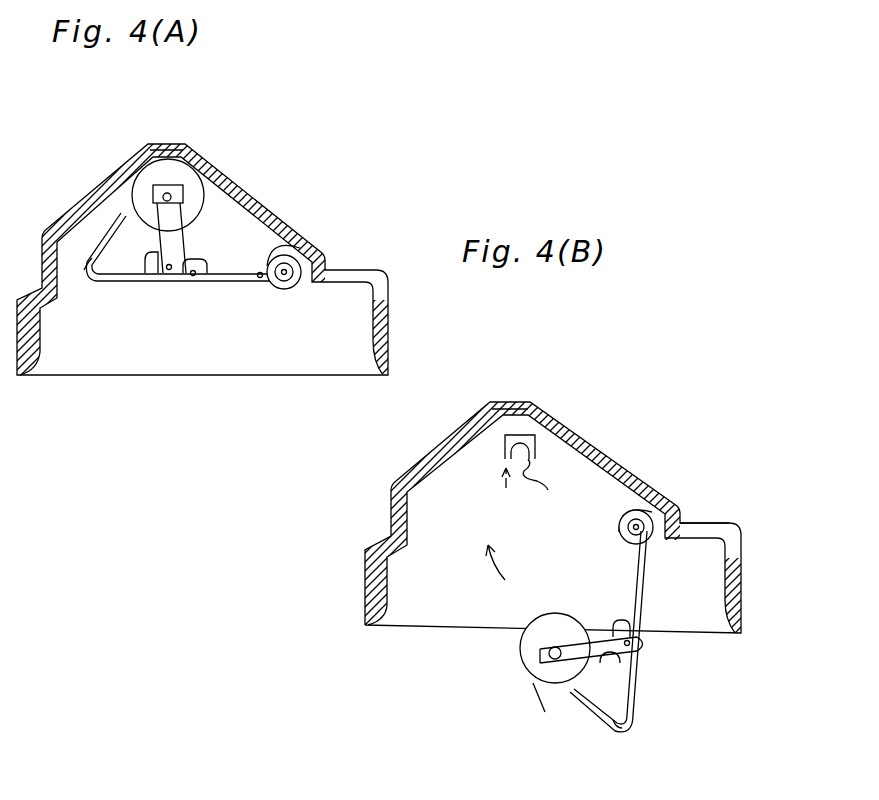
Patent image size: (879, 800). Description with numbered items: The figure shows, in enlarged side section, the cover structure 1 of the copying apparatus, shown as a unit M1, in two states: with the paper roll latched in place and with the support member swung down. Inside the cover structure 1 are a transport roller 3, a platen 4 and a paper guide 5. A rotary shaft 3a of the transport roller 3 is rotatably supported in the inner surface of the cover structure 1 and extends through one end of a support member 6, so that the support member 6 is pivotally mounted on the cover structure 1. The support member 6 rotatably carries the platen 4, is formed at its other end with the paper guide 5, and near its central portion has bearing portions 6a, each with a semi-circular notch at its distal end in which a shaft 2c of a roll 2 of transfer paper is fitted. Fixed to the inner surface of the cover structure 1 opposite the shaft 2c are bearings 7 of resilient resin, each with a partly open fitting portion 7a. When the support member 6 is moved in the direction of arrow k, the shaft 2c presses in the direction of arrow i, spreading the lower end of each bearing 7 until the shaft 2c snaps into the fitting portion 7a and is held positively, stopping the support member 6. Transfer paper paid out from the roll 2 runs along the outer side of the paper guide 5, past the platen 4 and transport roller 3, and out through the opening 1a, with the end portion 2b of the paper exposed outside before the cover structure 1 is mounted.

In FIG. 4A, the housing / mechanism unit M1 is at (287, 142).
In FIG. 4B, the housing / mechanism unit M1 is at (622, 407).
In FIG. 4A, the cover structure 1 is at (168, 145).
In FIG. 4B, the cover structure 1 is at (601, 443).
In FIG. 4B, the opening or slit 1a is at (737, 516).
In FIG. 4A, the roll of transfer material 2 is at (202, 190).
In FIG. 4B, the roll of transfer material 2 is at (550, 614).
In FIG. 4B, the end portion of the transfer paper 2b is at (534, 693).
In FIG. 4A, the shaft of the paper roll 2c is at (199, 210).
In FIG. 4B, the shaft of the paper roll 2c is at (580, 637).
In FIG. 4A, the transport roller 3 is at (291, 241).
In FIG. 4B, the transport roller 3 is at (636, 527).
In FIG. 4A, the rotary shaft 3a is at (285, 279).
In FIG. 4B, the rotary shaft 3a is at (624, 521).
In FIG. 4A, the platen 4 is at (192, 272).
In FIG. 4B, the platen 4 is at (648, 647).
In FIG. 4A, the paper guide 5 is at (98, 246).
In FIG. 4A, the support member 6 is at (229, 297).
In FIG. 4B, the support member 6 is at (662, 611).
In FIG. 4A, the bearing portions 6a is at (114, 262).
In FIG. 4B, the bearing portions 6a is at (606, 701).
In FIG. 4A, the bearings 7 is at (165, 186).
In FIG. 4B, the bearings 7 is at (505, 441).
In FIG. 4B, the fitting portion 7a is at (546, 487).
In FIG. 4B, the arrow i is at (506, 494).
In FIG. 4B, the arrow K k is at (490, 545).